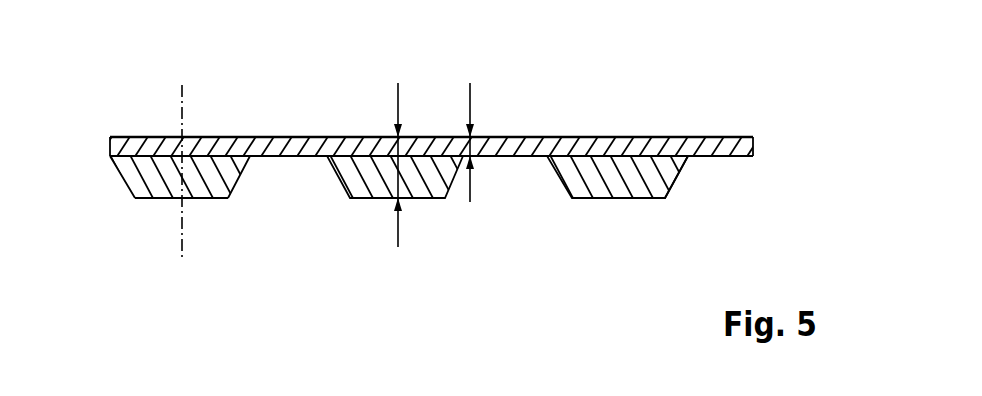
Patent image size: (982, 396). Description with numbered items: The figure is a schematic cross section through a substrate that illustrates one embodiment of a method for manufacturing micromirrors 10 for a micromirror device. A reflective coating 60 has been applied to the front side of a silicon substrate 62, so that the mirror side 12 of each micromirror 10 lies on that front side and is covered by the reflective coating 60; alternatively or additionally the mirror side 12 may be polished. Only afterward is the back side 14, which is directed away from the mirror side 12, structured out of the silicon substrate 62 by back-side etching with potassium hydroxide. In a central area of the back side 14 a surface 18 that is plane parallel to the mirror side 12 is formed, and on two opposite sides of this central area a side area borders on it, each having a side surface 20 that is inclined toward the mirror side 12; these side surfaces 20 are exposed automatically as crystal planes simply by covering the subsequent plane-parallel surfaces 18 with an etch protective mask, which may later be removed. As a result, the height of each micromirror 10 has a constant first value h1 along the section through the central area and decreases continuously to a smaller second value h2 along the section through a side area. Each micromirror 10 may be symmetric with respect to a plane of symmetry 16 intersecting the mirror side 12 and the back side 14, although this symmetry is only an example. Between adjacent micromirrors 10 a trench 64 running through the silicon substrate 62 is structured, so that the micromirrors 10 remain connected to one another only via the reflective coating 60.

The micromirror 10 is at (440, 161).
The mirror side 12 is at (429, 108).
The back side 14 is at (680, 196).
The plane of symmetry 16 is at (182, 118).
The plane-parallel surface 18 is at (197, 202).
The side surface 20 is at (122, 170).
The reflective coating 60 is at (283, 137).
The silicon substrate 62 is at (450, 210).
The trench 64 is at (293, 167).
The first value h1 is at (397, 105).
The second value h2 is at (472, 105).